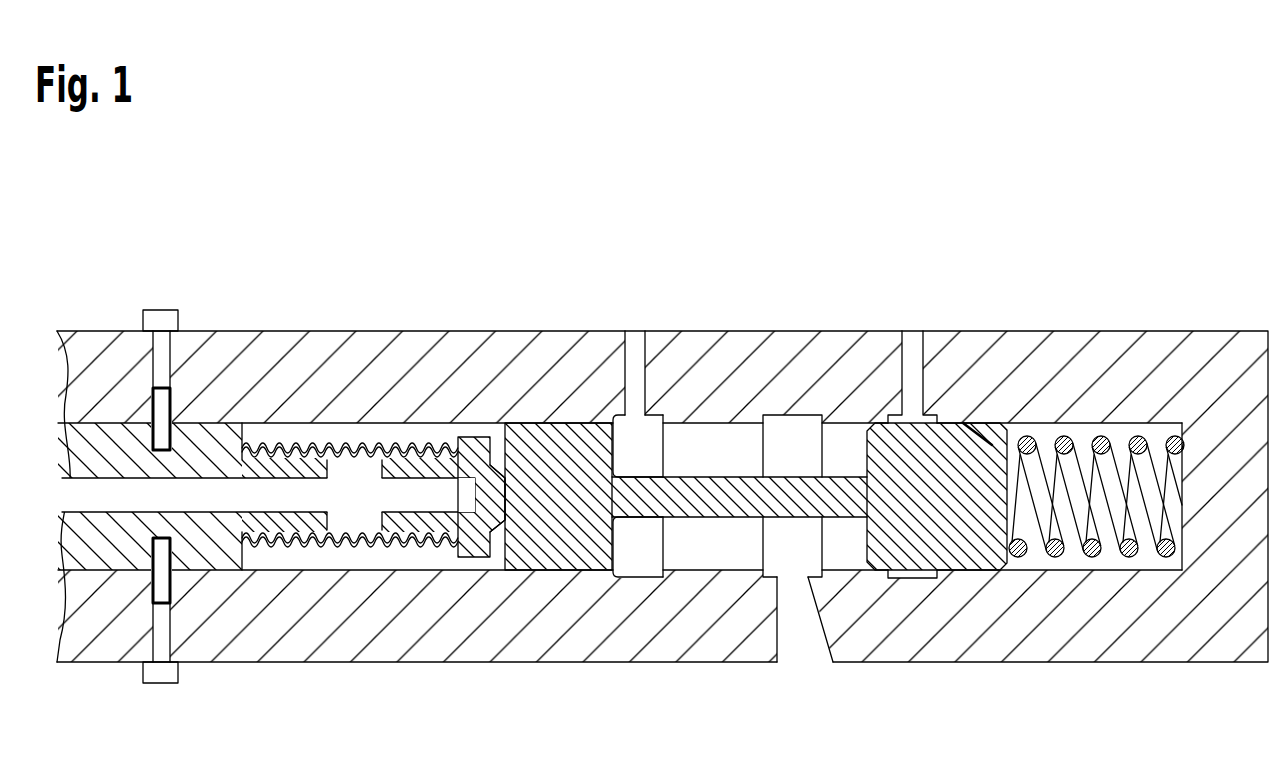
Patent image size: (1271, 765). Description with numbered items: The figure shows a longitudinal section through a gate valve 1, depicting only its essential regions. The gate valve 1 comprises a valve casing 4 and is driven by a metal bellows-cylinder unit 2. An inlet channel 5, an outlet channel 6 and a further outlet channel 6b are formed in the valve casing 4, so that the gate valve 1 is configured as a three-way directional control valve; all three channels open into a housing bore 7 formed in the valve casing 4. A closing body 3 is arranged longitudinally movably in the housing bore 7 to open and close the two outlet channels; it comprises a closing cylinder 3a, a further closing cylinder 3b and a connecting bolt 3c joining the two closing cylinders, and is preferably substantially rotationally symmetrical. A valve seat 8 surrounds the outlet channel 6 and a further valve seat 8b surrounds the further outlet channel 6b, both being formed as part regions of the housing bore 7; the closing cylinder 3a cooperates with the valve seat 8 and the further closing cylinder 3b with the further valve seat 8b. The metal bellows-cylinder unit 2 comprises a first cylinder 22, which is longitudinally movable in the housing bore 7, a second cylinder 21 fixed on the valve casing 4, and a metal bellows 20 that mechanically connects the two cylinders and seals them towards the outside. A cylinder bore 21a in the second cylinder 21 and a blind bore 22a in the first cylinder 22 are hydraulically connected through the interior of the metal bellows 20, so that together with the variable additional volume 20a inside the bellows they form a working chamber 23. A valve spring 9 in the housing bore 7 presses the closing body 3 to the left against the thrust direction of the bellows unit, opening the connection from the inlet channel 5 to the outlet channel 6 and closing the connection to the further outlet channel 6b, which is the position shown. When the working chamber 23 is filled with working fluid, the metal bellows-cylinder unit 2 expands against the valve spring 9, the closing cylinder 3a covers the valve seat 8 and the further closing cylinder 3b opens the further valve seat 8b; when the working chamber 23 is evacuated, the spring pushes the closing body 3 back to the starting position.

The gate valve 1 is at (267, 185).
The metal bellows-cylinder unit 2 is at (338, 563).
The closing body 3 is at (693, 453).
The closing cylinder 3a is at (553, 472).
The further closing cylinder 3b is at (885, 457).
The connecting bolt 3c is at (733, 493).
The valve casing 4 is at (1148, 362).
The inlet channel 5 is at (803, 638).
The outlet channel 6 is at (643, 353).
The further outlet channel 6b is at (917, 352).
The housing bore 7 is at (718, 558).
The valve seat 8 is at (572, 562).
The further valve seat 8b is at (990, 443).
The valve spring 9 is at (1058, 443).
The metal bellows 20 is at (362, 457).
The additional volume 20a is at (350, 485).
The second cylinder 21 is at (100, 450).
The cylinder bore 21a is at (117, 493).
The first cylinder 22 is at (482, 553).
The blind bore 22a is at (433, 490).
The working chamber 23 is at (213, 497).